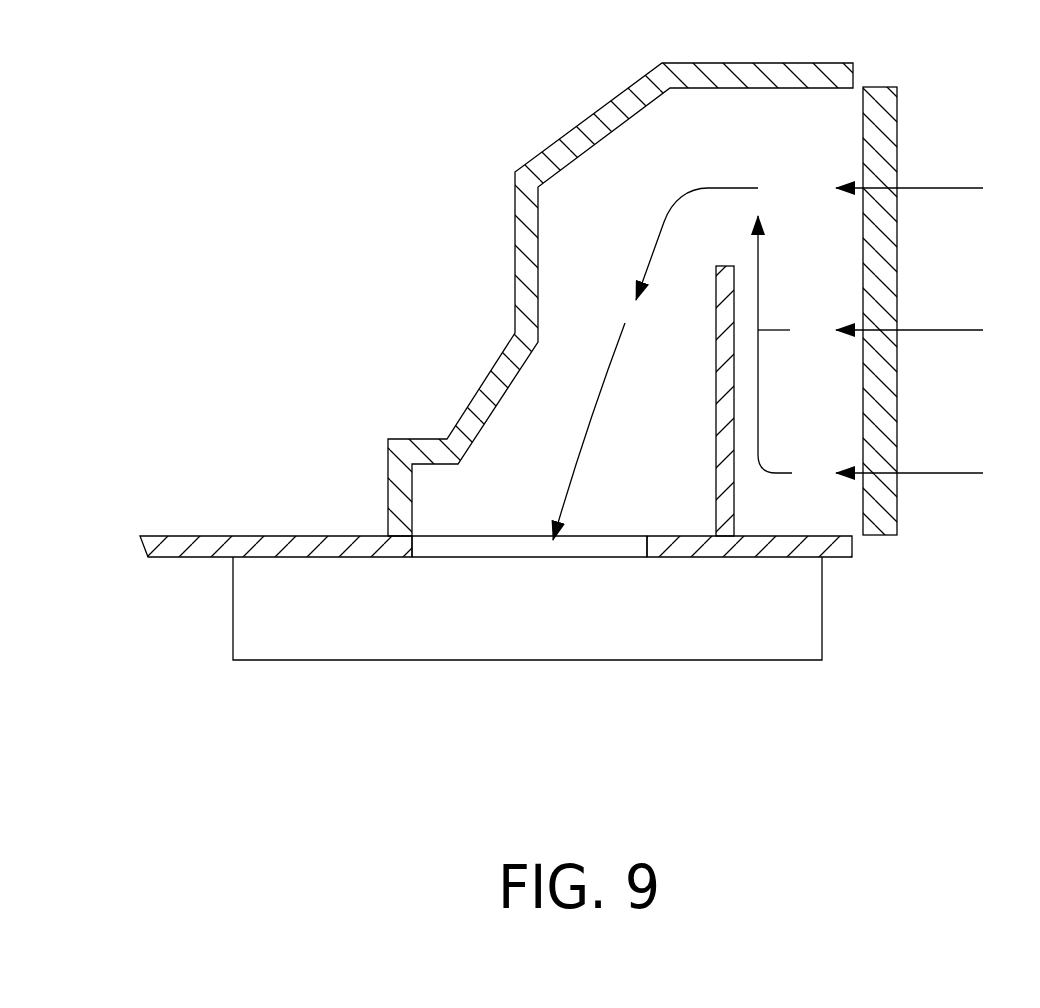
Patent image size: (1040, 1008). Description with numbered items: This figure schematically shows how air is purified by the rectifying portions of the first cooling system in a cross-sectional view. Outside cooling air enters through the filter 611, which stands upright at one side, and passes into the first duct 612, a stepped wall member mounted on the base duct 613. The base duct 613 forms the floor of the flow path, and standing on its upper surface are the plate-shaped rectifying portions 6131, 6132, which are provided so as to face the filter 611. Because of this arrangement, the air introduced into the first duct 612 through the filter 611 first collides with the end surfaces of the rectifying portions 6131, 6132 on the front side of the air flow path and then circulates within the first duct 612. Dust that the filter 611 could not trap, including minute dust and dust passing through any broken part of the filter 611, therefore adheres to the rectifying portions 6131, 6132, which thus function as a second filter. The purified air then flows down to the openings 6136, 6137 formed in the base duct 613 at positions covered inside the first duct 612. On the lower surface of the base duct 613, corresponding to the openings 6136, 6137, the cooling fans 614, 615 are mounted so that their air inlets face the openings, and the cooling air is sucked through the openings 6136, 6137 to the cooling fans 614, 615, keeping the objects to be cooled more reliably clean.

The filter 611 is at (863, 115).
The first duct 612 is at (625, 92).
The base duct 613 is at (495, 531).
The rectifying portion 6131 is at (667, 342).
The rectifying portion 6132 is at (727, 265).
The opening 6136 is at (529, 581).
The opening 6137 is at (412, 542).
The cooling fan 614 is at (508, 654).
The cooling fan 615 is at (265, 645).